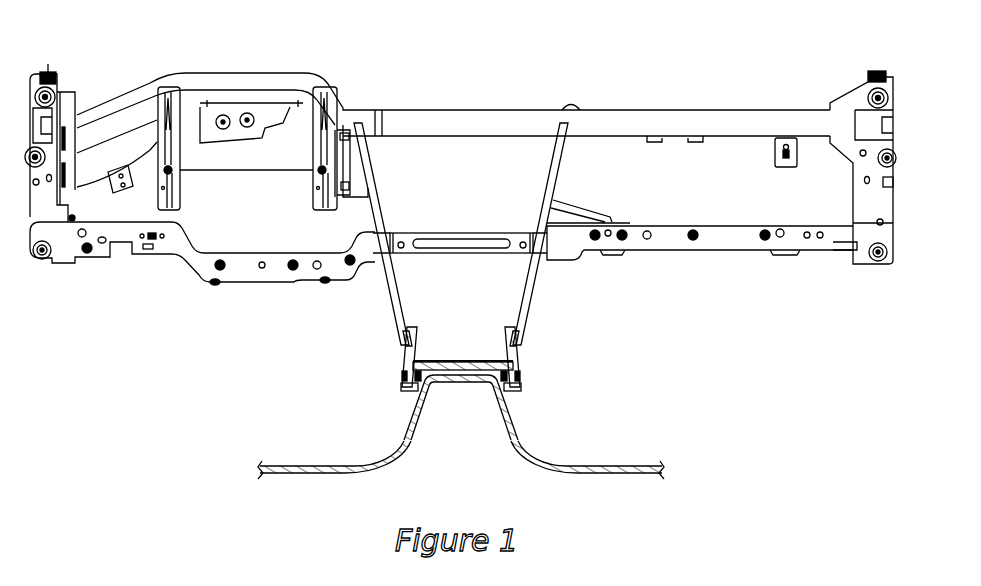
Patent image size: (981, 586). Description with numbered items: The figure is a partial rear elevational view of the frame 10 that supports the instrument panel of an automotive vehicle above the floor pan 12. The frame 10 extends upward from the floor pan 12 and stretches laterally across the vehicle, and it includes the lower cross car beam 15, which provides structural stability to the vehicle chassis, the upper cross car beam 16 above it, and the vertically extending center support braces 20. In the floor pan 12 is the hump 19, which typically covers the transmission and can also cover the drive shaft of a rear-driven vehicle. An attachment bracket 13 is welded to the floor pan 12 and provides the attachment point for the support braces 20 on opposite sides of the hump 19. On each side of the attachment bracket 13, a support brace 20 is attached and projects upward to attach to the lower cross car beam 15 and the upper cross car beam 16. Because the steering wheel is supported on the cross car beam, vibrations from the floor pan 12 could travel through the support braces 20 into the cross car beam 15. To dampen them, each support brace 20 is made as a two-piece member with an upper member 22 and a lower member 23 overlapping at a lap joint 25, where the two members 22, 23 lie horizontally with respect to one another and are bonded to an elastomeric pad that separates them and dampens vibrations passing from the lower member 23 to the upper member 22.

The frame 10 is at (699, 78).
The floor pan 12 is at (624, 466).
The attachment bracket 13 is at (407, 412).
The lower cross car beam 15 is at (740, 243).
The upper cross car beam 16 is at (468, 110).
The hump 19 is at (475, 378).
The support brace 20 is at (400, 330).
The upper member 22 is at (397, 293).
The lower member 23 is at (403, 357).
The lap joint 25 is at (507, 330).